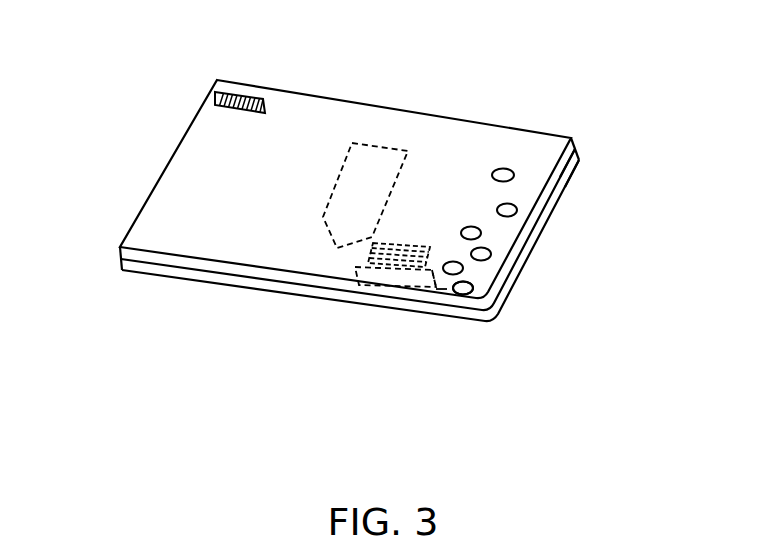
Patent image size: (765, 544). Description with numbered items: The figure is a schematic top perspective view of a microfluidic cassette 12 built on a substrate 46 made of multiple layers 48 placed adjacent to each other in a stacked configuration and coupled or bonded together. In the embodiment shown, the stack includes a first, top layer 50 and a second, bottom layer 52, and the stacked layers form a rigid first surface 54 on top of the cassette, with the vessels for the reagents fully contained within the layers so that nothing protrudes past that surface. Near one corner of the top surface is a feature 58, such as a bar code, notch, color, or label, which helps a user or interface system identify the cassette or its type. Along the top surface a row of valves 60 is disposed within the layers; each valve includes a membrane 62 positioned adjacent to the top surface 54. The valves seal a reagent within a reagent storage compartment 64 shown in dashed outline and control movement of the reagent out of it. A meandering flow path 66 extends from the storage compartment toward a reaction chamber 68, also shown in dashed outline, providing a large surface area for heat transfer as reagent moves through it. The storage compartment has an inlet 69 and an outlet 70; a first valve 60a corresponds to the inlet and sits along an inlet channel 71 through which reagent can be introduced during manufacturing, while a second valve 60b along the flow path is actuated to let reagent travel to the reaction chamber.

The microfluidic cassette 12 is at (158, 48).
The substrate 46 is at (170, 158).
The layers 48 is at (594, 151).
The first layer 50 is at (580, 141).
The second layer 52 is at (583, 162).
The first surface 54 is at (462, 137).
The feature 58 is at (247, 92).
The valves 60 is at (506, 163).
The first valve 60a is at (462, 266).
The second valve 60b is at (470, 293).
The membrane 62 is at (514, 177).
The reagent storage compartment 64 is at (367, 283).
The flow path 66 is at (405, 243).
The reaction chamber 68 is at (385, 144).
The inlet 69 is at (428, 293).
The outlet 70 is at (472, 283).
The inlet channel 71 is at (438, 291).